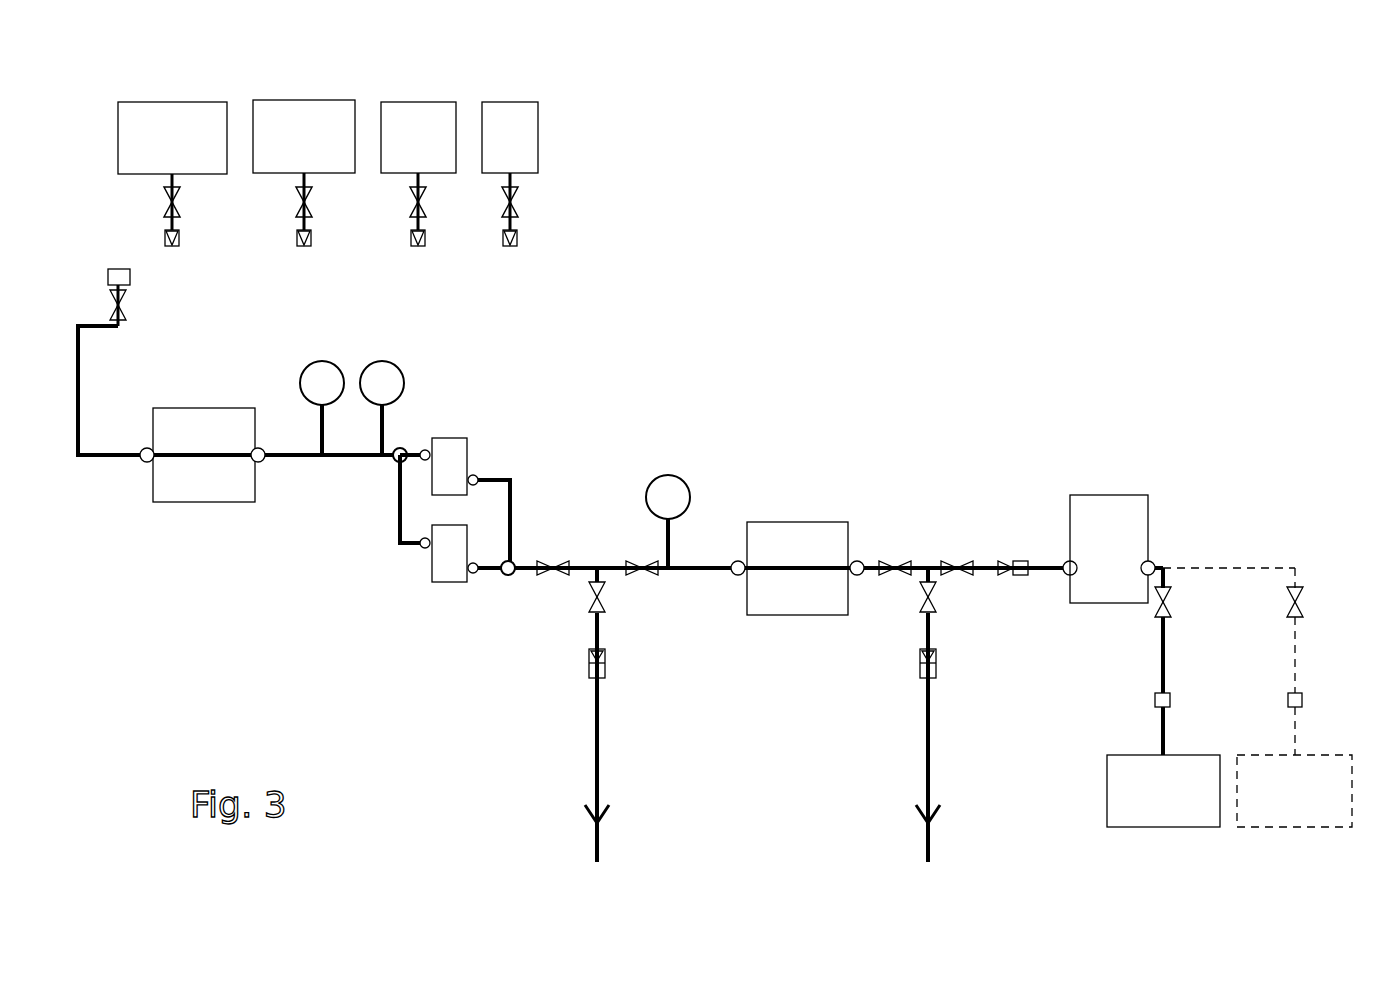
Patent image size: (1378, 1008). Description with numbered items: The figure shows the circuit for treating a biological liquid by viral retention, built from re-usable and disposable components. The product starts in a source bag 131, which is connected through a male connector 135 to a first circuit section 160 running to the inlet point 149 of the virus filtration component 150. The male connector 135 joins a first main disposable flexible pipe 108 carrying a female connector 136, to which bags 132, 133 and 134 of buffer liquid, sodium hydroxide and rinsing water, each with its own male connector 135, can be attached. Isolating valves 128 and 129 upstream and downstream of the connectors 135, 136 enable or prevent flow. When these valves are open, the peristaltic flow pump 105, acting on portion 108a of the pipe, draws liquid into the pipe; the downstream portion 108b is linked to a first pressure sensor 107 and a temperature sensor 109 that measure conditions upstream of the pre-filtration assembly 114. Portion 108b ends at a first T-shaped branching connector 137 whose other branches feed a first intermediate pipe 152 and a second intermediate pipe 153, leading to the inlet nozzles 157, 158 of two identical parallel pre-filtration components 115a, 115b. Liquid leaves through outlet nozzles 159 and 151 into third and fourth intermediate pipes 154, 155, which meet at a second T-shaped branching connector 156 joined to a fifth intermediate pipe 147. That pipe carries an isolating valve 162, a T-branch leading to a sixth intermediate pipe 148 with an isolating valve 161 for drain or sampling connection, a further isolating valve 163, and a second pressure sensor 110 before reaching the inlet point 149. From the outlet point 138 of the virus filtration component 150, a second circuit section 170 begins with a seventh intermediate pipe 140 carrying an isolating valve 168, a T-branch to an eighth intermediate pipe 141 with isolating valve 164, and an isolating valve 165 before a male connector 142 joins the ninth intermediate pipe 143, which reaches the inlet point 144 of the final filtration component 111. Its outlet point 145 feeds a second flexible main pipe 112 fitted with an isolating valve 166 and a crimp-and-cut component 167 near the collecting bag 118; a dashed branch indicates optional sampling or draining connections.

The flow pump 105 is at (205, 490).
The first pressure sensor 107 is at (315, 362).
The first main disposable flexible pipe 108 is at (80, 378).
The portion of the first pipe 108a is at (205, 453).
The portion of the first pipe 108b is at (288, 452).
The temperature sensor 109 is at (372, 362).
The second pressure sensor 110 is at (664, 475).
The final filtration component 111 is at (1145, 515).
The second flexible main pipe 112 is at (1168, 657).
The pre-filtration assembly 114 is at (392, 610).
The first pre-filtration component 115a is at (455, 440).
The second pre-filtration component 115b is at (448, 585).
The collecting bag 118 is at (1118, 786).
The isolating valve 128 is at (124, 318).
The isolating valves 129 is at (180, 200).
The source bag 131 is at (175, 100).
The bag 132 is at (307, 99).
The bag 133 is at (421, 101).
The bag 134 is at (512, 101).
The male connector 135 is at (176, 247).
The female connector 136 is at (118, 268).
The first T-shaped branching connector 137 is at (395, 462).
The outlet point 138 is at (858, 578).
The seventh intermediate pipe 140 is at (930, 560).
The eighth intermediate pipe 141 is at (935, 574).
The male connector 142 is at (1010, 560).
The ninth intermediate pipe 143 is at (1045, 575).
The inlet point 144 is at (1066, 562).
The outlet point 145 is at (1158, 564).
The fifth intermediate pipe 147 is at (527, 575).
The sixth intermediate pipe 148 is at (590, 580).
The inlet point 149 is at (735, 562).
The virus filtration component 150 is at (796, 600).
The outlet nozzle 151 is at (476, 562).
The first intermediate pipe 152 is at (403, 450).
The second intermediate pipe 153 is at (398, 516).
The third intermediate pipe 154 is at (512, 480).
The fourth intermediate pipe 155 is at (486, 572).
The second T-shaped branching connector 156 is at (512, 562).
The inlet nozzle 157 is at (425, 448).
The inlet nozzle 158 is at (420, 546).
The outlet nozzle 159 is at (477, 477).
The first circuit section 160 is at (508, 718).
The isolating valve 161 is at (603, 600).
The isolating valve 162 is at (558, 560).
The isolating valve 163 is at (648, 560).
The isolating valve 164 is at (936, 605).
The isolating valve 165 is at (963, 560).
The isolating valve 166 is at (1172, 598).
The connector 167 is at (1172, 700).
The isolating valve 168 is at (893, 560).
The second circuit section 170 is at (1056, 720).